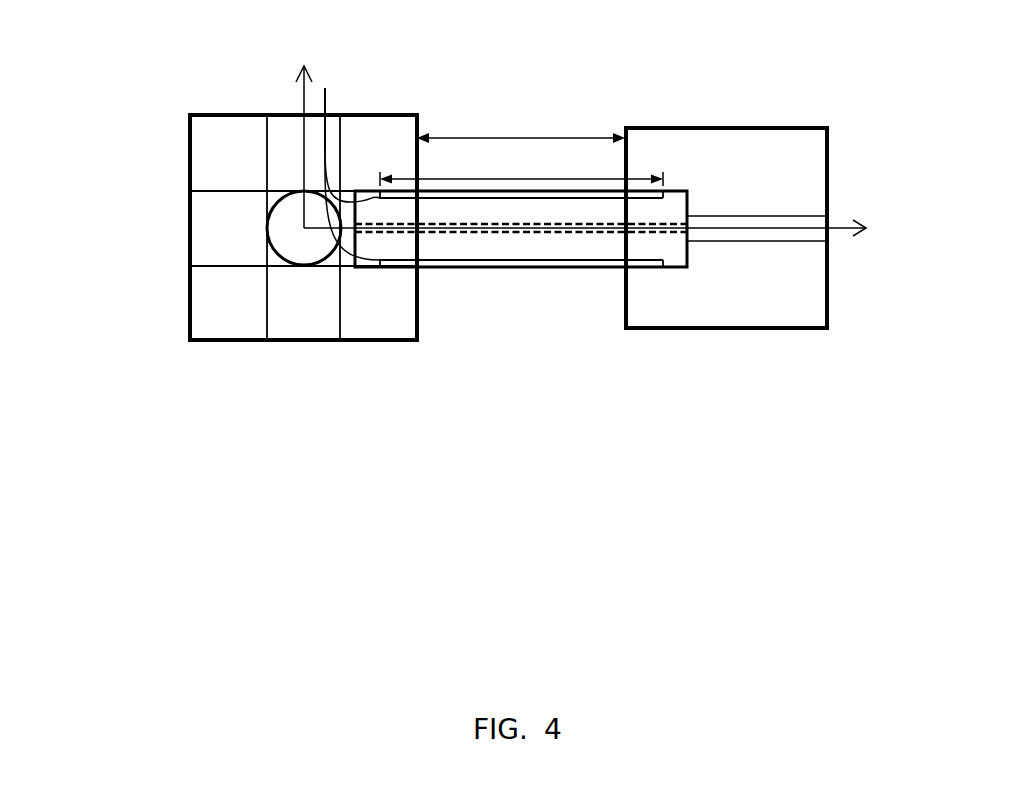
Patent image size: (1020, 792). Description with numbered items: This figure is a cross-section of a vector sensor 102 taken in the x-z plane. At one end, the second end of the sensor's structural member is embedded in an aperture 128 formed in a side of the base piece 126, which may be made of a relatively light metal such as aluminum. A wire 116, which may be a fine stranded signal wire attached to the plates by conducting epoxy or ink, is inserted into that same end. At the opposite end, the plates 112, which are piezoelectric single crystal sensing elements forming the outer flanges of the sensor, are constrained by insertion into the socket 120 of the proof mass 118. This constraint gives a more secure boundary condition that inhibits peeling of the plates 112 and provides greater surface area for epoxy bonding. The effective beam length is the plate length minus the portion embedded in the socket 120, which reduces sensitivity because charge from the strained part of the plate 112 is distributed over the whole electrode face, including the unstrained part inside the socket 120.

The vector sensor 102 is at (492, 327).
The plates 112 is at (453, 268).
The wire 116 is at (327, 99).
The proof mass 118 is at (753, 153).
The socket 120 is at (624, 263).
The base piece 126 is at (217, 138).
The aperture 128 is at (217, 228).